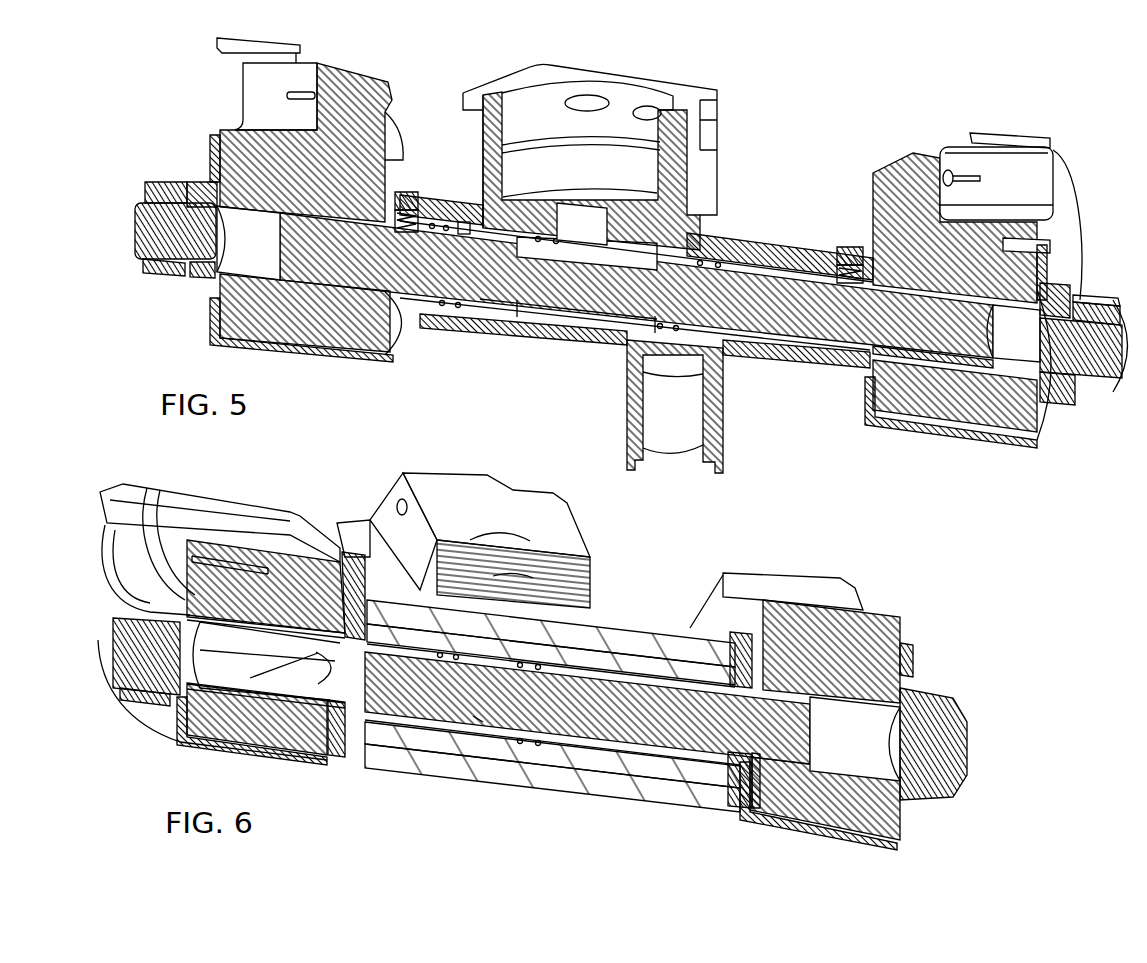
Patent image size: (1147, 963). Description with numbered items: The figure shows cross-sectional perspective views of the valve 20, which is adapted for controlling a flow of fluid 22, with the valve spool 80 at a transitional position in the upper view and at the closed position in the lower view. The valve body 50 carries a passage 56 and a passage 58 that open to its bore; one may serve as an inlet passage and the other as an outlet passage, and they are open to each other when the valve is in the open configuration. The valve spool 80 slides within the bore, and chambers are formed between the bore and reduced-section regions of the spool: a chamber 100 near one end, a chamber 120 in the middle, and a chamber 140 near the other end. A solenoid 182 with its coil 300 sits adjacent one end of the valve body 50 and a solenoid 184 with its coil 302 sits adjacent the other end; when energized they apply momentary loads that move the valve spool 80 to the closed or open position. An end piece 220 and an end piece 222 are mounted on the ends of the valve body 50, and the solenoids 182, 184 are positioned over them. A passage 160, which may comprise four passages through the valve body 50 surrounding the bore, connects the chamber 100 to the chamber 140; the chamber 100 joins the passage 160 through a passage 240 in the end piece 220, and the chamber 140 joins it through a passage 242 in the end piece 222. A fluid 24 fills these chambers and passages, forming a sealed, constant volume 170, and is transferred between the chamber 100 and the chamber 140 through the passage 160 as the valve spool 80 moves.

In FIG. 5, the valve 20 is at (1005, 50).
In FIG. 6, the valve 20 is at (907, 543).
In FIG. 5, the fluid 22 is at (572, 312).
In FIG. 6, the fluid 22 is at (473, 720).
In FIG. 5, the fluid 24 is at (246, 238).
In FIG. 6, the fluid 24 is at (570, 765).
In FIG. 5, the valve body 50 is at (787, 227).
In FIG. 6, the valve body 50 is at (410, 768).
In FIG. 5, the passage 56 is at (600, 230).
In FIG. 5, the passage 58 is at (677, 357).
In FIG. 5, the valve spool 80 is at (552, 282).
In FIG. 6, the valve spool 80 is at (583, 683).
In FIG. 5, the chamber 100 is at (463, 230).
In FIG. 5, the chamber 120 is at (580, 318).
In FIG. 6, the chamber 120 is at (483, 722).
In FIG. 5, the chamber 140 is at (827, 357).
In FIG. 6, the chamber 140 is at (683, 673).
In FIG. 6, the passage 160 is at (633, 643).
In FIG. 5, the volume 170 is at (247, 252).
In FIG. 6, the volume 170 is at (668, 777).
In FIG. 5, the solenoid 182 is at (353, 67).
In FIG. 6, the solenoid 182 is at (267, 507).
In FIG. 5, the solenoid 184 is at (917, 423).
In FIG. 6, the solenoid 184 is at (782, 565).
In FIG. 5, the end piece 220 is at (172, 245).
In FIG. 6, the end piece 220 is at (113, 663).
In FIG. 5, the end piece 222 is at (1091, 367).
In FIG. 6, the end piece 222 is at (972, 758).
In FIG. 6, the passage 240 is at (367, 740).
In FIG. 6, the passage 242 is at (722, 775).
In FIG. 5, the coil 300 is at (320, 310).
In FIG. 5, the coil 302 is at (993, 393).